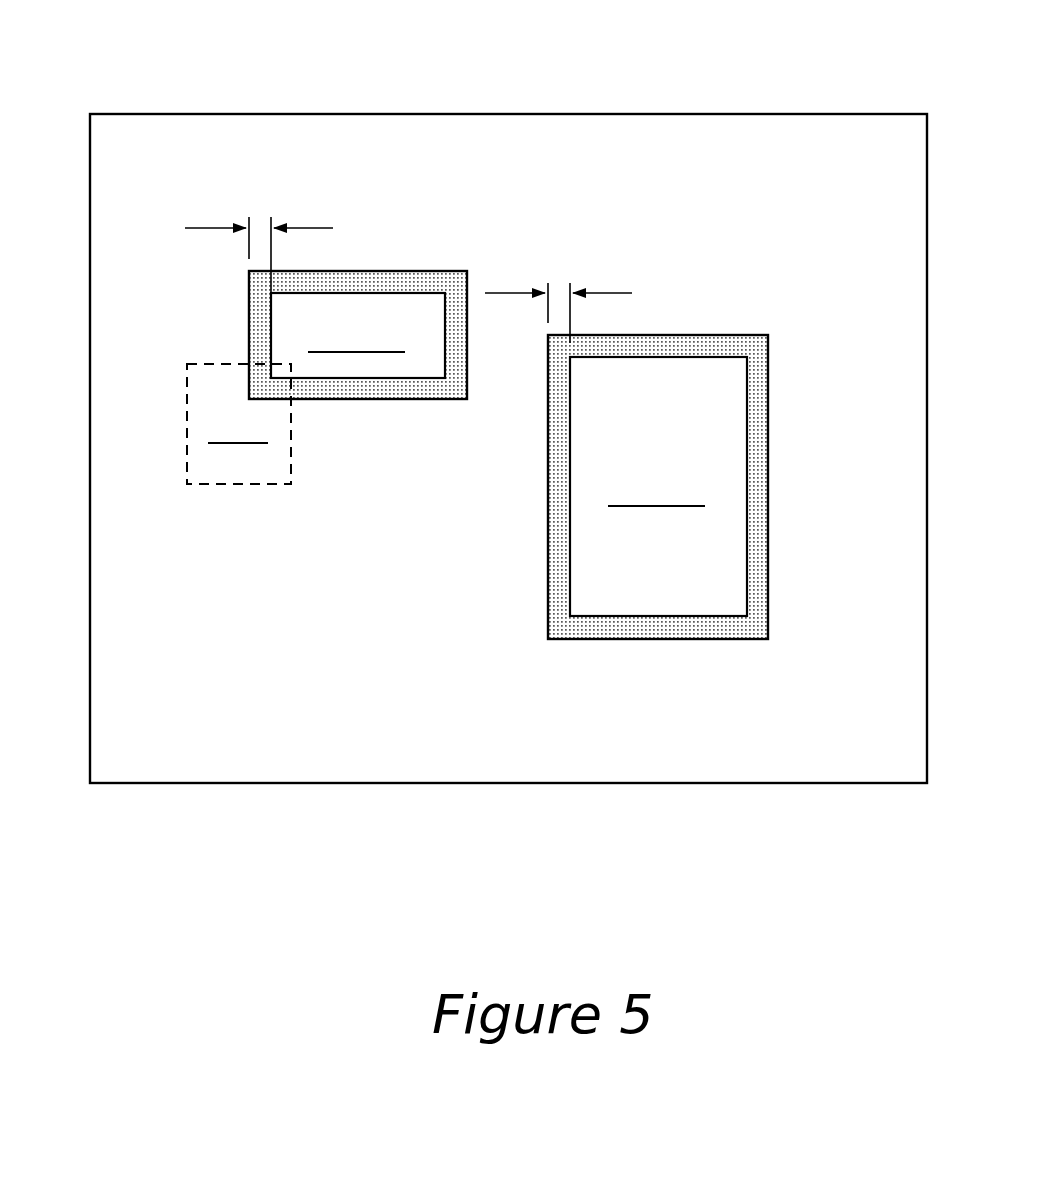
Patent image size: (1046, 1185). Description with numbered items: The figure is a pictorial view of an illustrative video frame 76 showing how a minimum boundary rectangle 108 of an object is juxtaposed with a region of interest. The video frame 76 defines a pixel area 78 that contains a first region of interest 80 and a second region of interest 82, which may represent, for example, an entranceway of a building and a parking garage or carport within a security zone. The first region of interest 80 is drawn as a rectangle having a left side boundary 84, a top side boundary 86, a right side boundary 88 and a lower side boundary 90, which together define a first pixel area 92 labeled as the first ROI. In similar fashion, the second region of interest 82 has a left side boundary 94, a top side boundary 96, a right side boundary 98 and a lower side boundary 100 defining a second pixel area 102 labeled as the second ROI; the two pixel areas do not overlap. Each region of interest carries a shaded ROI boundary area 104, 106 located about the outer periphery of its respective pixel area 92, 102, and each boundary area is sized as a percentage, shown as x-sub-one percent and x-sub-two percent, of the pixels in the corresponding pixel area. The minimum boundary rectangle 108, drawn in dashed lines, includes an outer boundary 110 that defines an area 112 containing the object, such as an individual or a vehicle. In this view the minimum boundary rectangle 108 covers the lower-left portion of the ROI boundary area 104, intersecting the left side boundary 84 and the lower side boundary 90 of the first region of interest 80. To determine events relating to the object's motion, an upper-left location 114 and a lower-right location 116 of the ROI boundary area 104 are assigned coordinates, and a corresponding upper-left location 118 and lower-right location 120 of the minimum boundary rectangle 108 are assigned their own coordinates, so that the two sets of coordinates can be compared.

The video frame 76 is at (549, 90).
The pixel area 78 is at (702, 213).
The first region of interest 80 is at (416, 256).
The second region of interest 82 is at (716, 320).
The left side boundary 84 is at (249, 301).
The top side boundary 86 is at (451, 272).
The right side boundary 88 is at (467, 283).
The lower side boundary 90 is at (358, 400).
The first pixel area 92 is at (381, 366).
The left side boundary 94 is at (548, 490).
The top side boundary 96 is at (748, 336).
The right side boundary 98 is at (768, 389).
The lower side boundary 100 is at (656, 640).
The second pixel area 102 is at (683, 581).
The ROI boundary area 104 is at (259, 337).
The ROI boundary area 106 is at (759, 498).
The minimum boundary rectangle 108 is at (221, 506).
The outer boundary 110 is at (187, 434).
The area 112 is at (254, 455).
The upper-left location 114 is at (249, 283).
The lower-right location 116 is at (456, 400).
The upper-left location 118 is at (187, 365).
The lower-right location 120 is at (291, 484).